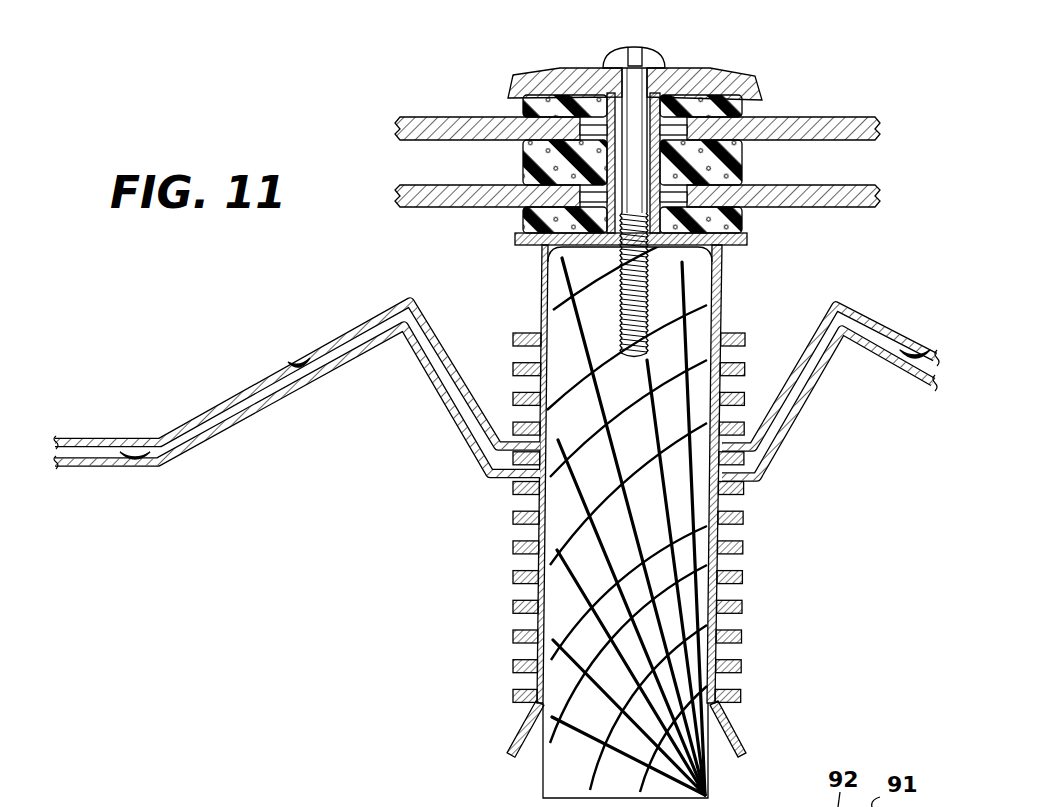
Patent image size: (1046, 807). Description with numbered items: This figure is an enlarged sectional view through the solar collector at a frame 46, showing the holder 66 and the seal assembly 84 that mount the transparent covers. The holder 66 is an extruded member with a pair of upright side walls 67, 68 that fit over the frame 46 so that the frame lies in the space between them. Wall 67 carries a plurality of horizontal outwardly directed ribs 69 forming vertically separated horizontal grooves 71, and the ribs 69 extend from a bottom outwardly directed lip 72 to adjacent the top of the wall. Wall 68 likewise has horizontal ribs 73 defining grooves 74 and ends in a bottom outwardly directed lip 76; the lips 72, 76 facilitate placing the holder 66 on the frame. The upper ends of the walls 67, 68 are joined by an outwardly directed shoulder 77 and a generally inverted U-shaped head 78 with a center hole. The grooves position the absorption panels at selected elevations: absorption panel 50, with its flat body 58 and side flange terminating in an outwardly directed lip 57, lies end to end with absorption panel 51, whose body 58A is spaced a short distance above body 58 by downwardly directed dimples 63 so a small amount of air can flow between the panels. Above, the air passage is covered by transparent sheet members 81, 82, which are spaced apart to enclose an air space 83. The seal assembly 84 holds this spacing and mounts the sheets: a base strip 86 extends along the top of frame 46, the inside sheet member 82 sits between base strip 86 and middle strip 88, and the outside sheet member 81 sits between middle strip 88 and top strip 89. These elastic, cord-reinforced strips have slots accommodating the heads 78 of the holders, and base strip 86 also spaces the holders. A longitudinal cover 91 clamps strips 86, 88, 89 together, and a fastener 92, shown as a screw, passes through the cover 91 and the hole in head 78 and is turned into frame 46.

The frame 46 is at (652, 449).
The absorption panel 50 is at (77, 500).
The absorption panel 51 is at (79, 420).
The lip 57 is at (503, 483).
The body 58 is at (245, 393).
The body 58A is at (162, 462).
The dimples 63 is at (135, 455).
The holder 66 is at (480, 606).
The side wall 67 is at (543, 532).
The side wall 68 is at (708, 397).
The ribs 69 is at (510, 578).
The grooves 71 is at (517, 680).
The lip 72 is at (515, 740).
The ribs 73 is at (742, 545).
The grooves 74 is at (735, 650).
The lip 76 is at (742, 738).
The shoulder 77 is at (523, 245).
The head 78 is at (652, 93).
The transparent sheet member 81 is at (470, 115).
The transparent sheet member 82 is at (468, 207).
The air space 83 is at (425, 163).
The seal assembly 84 is at (505, 64).
The base strip 86 is at (745, 222).
The middle strip 88 is at (742, 163).
The top strip 89 is at (747, 110).
The cover 91 is at (578, 68).
The fastener 92 is at (626, 48).